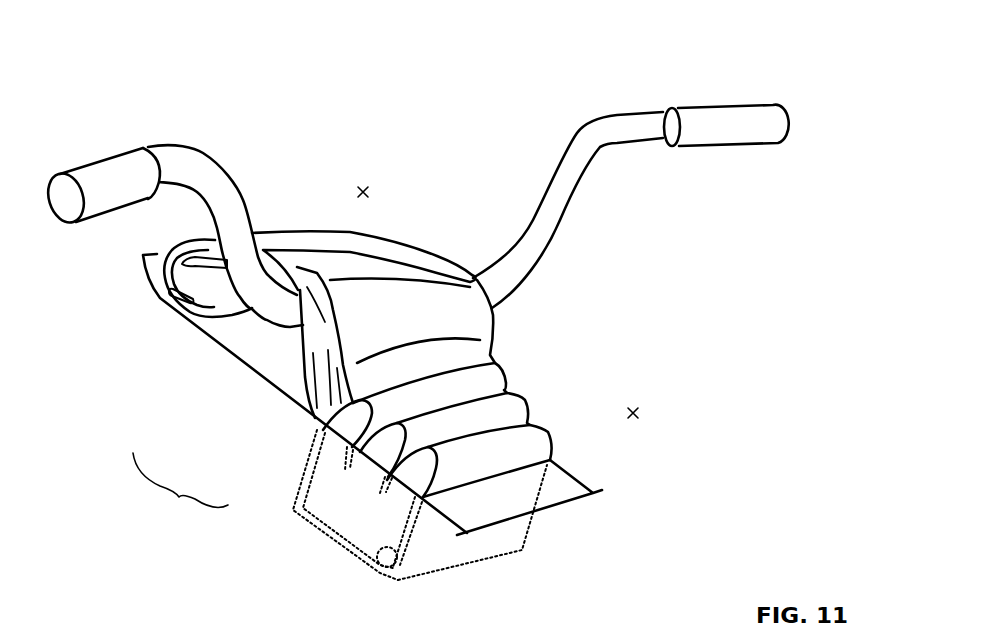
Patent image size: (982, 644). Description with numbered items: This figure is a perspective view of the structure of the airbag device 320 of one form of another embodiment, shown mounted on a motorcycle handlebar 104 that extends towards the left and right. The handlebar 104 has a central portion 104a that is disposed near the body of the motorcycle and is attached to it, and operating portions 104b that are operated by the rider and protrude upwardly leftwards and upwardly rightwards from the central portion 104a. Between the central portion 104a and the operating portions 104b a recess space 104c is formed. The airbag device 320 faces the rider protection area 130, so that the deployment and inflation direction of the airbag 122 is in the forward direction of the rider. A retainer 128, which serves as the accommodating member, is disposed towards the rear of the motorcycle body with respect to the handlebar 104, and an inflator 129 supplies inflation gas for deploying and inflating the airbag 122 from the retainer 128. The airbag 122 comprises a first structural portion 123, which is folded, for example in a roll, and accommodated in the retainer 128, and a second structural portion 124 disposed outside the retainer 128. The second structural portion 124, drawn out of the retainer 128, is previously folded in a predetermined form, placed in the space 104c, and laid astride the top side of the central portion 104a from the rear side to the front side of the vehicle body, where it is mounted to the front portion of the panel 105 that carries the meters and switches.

The handlebar 104 is at (508, 262).
The central portion 104a is at (297, 310).
The operating portions 104b is at (116, 172).
The recess space 104c is at (363, 190).
The panel 105 is at (160, 283).
The airbag 122 is at (180, 493).
The first structural portion 123 is at (328, 480).
The second structural portion 124 is at (222, 316).
The retainer 128 is at (527, 535).
The inflator 129 is at (393, 573).
The rider protection area 130 is at (636, 410).
The airbag device 320 is at (558, 370).